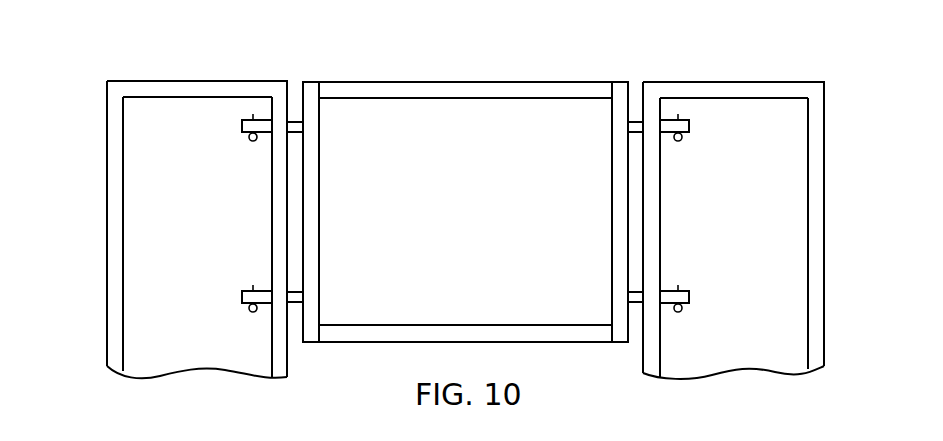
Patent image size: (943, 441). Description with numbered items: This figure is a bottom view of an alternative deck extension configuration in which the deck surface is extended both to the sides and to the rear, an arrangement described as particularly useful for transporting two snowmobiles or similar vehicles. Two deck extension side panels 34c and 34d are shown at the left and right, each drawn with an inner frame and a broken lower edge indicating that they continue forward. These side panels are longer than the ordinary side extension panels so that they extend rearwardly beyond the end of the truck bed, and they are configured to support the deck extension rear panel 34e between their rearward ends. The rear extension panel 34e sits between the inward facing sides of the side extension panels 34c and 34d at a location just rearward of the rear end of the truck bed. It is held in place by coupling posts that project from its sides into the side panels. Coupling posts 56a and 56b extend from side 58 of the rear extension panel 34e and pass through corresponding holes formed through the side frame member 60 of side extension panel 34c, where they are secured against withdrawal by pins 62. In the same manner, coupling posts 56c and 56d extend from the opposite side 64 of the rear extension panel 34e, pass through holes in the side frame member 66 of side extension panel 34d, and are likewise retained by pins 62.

The deck extension side panel 34c is at (140, 216).
The deck extension side panel 34d is at (797, 201).
The deck extension rear panel 34e is at (408, 118).
The coupling post 56a is at (242, 296).
The coupling post 56b is at (242, 126).
The coupling post 56c is at (689, 296).
The coupling post 56d is at (689, 126).
The side of the rear extension panel 58 is at (300, 86).
The side frame member 60 is at (277, 222).
The pin 62 is at (251, 142).
The side of the rear extension panel 64 is at (630, 90).
The side frame member 66 is at (652, 200).